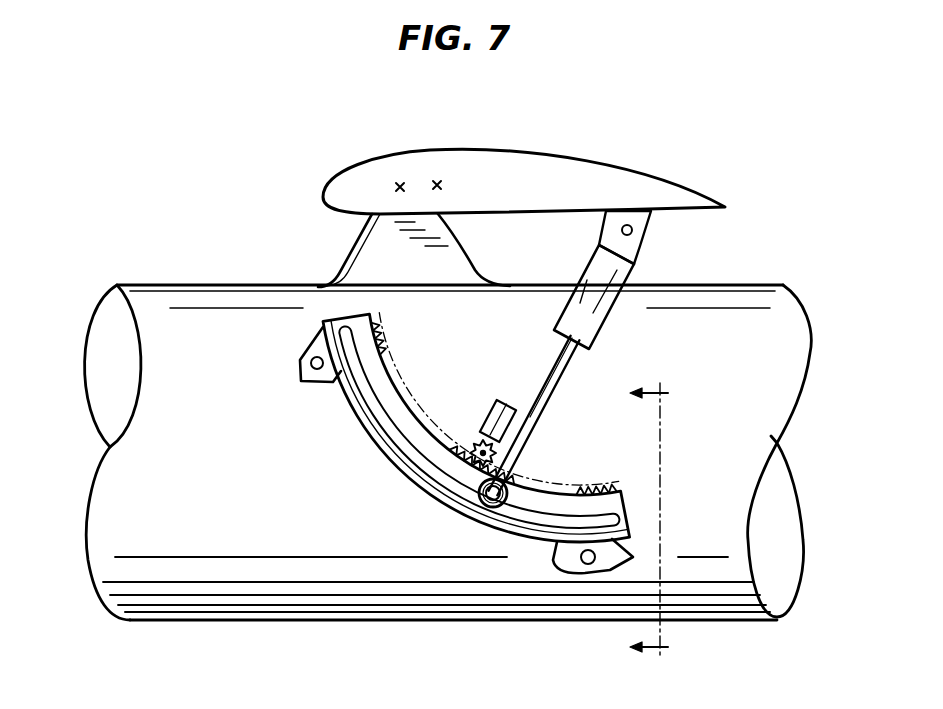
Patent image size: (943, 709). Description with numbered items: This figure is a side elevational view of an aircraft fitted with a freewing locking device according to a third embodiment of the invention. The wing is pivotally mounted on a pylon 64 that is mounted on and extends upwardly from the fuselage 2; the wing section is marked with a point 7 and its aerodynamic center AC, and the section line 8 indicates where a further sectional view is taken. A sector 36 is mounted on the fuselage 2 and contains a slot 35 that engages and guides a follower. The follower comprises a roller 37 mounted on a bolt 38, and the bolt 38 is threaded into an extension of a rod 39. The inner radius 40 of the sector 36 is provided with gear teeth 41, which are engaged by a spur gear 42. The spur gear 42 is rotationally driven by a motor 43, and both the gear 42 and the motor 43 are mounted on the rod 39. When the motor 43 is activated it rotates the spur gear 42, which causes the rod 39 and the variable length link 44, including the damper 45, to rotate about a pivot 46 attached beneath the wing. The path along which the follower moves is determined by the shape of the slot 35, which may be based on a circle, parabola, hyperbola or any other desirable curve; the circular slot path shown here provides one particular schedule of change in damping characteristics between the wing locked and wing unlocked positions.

The fuselage 2 is at (556, 614).
The airfoil 7 is at (400, 183).
The aerodynamic center AC is at (437, 181).
The section line 8- 8 is at (659, 524).
The slot 35 is at (367, 390).
The sector 36 is at (365, 430).
The roller 37 is at (468, 512).
The bolt 38 is at (493, 510).
The rod 39 is at (548, 372).
The inner radius 40 is at (543, 487).
The gear teeth 41 is at (605, 486).
The spur gear 42 is at (480, 442).
The motor 43 is at (500, 402).
The variable length link 44 is at (580, 368).
The damper 45 is at (578, 275).
The pivot 46 is at (627, 225).
The pylon 64 is at (352, 249).